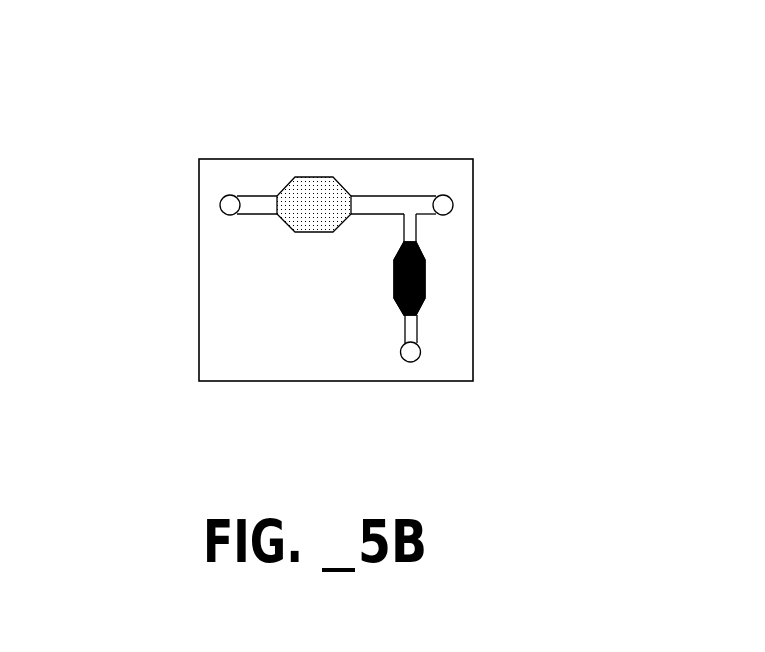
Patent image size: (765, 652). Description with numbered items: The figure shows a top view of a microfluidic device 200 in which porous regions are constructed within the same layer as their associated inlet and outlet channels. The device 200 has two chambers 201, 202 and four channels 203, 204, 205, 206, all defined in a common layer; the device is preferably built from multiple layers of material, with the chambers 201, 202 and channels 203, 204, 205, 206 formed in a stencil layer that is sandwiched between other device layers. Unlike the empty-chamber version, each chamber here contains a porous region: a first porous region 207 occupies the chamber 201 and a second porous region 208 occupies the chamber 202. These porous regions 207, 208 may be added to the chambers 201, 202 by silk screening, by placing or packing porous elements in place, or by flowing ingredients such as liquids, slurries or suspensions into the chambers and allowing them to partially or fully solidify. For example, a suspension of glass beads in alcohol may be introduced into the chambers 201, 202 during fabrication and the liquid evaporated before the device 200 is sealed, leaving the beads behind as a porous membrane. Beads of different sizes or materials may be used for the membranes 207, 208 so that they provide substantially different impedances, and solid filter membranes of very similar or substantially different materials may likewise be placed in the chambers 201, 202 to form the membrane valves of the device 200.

The microfluidic device 200 is at (143, 73).
The chamber 201 is at (423, 292).
The chamber 202 is at (320, 177).
The channel 203 is at (267, 215).
The channel 204 is at (372, 215).
The channel 205 is at (400, 230).
The channel 206 is at (404, 330).
The porous region 207 is at (423, 258).
The porous region 208 is at (323, 203).